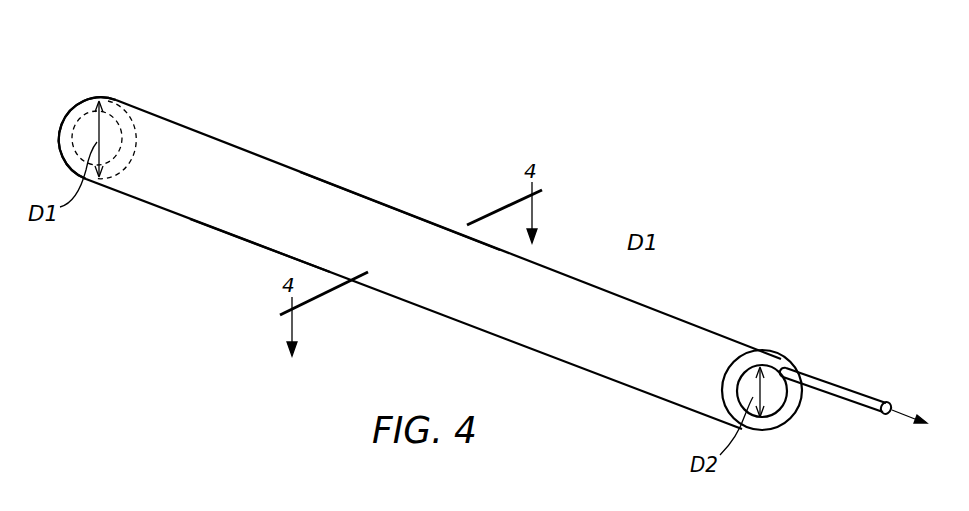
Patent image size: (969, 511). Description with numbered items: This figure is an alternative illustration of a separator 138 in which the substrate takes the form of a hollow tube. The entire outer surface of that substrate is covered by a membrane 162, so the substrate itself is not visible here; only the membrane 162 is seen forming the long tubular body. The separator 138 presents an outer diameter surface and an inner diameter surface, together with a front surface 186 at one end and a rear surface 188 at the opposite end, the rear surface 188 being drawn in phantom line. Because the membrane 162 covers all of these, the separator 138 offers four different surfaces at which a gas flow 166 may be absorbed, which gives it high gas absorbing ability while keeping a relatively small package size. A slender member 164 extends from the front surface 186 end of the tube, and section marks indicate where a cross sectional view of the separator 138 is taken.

The separator 138 is at (593, 214).
The membrane 162 is at (250, 243).
The inner wire member 164 is at (835, 387).
The gas flow 166 is at (333, 141).
The front surface 186 is at (788, 410).
The rear surface 188 is at (83, 112).